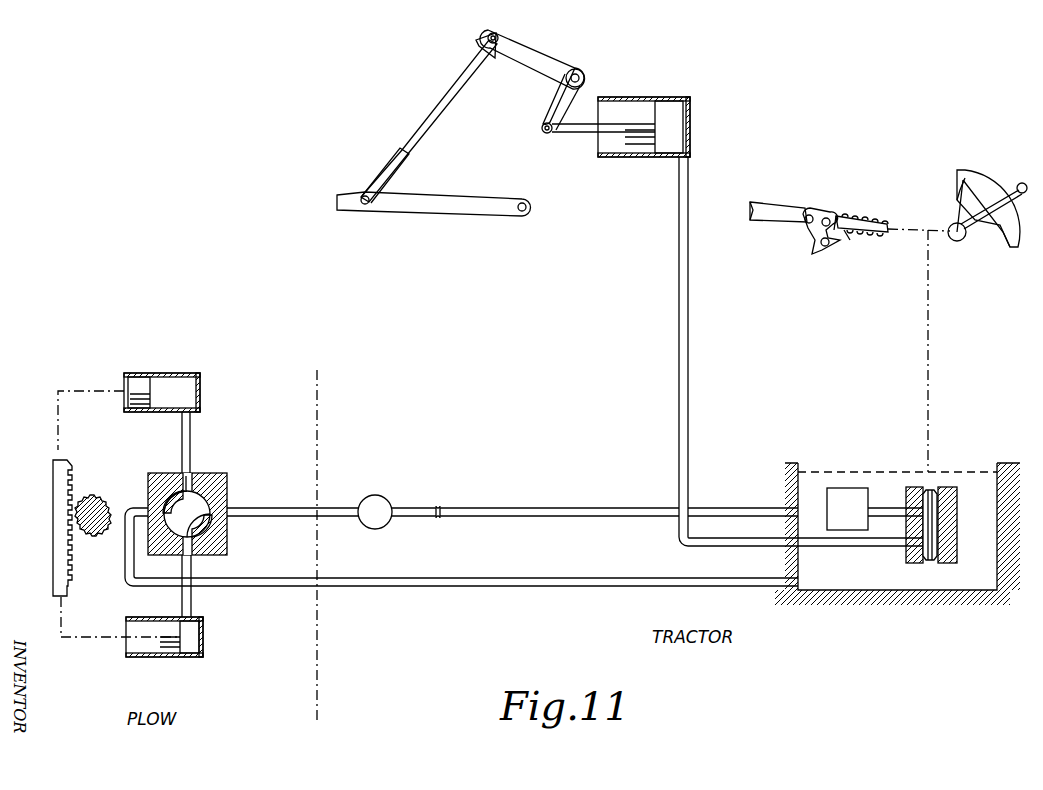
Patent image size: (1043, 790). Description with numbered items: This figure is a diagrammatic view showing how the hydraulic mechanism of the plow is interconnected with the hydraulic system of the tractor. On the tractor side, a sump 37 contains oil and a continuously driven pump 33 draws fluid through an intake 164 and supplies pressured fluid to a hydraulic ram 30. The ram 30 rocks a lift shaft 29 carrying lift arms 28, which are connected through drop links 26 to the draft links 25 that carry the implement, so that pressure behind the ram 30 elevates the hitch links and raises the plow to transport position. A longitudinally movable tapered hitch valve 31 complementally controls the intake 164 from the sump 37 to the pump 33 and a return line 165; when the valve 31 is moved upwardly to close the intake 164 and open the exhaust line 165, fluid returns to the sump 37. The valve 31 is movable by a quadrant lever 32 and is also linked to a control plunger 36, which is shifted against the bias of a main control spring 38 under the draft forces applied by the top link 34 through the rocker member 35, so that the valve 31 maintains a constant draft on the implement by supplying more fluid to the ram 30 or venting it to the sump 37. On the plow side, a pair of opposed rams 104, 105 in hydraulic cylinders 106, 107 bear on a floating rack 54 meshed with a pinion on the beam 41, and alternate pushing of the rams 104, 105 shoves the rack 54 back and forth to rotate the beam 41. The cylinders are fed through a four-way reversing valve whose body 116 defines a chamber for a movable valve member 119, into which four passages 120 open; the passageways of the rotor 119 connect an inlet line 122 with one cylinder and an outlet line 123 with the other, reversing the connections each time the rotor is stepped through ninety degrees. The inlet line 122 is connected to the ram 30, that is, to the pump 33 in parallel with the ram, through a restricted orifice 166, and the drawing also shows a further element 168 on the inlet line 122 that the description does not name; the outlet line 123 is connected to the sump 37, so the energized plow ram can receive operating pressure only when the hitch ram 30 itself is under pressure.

The draft links 25 is at (447, 213).
The drop links 26 is at (436, 114).
The lift arms 28 is at (534, 55).
The lift shaft 29 is at (580, 76).
The hydraulic ram 30 is at (640, 150).
The tapered hitch valve 31 is at (938, 526).
The quadrant lever 32 is at (1012, 178).
The pump 33 is at (845, 490).
The top link 34 is at (773, 205).
The rocker member 35 is at (819, 210).
The control plunger 36 is at (884, 220).
The sump 37 is at (899, 592).
The main control spring 38 is at (862, 244).
The beam 41 is at (94, 497).
The rack 54 is at (58, 492).
The ram 104 is at (139, 384).
The ram 105 is at (175, 657).
The hydraulic cylinder 106 is at (186, 373).
The hydraulic cylinder 107 is at (152, 657).
The valve body 116 is at (204, 499).
The movable valve member 119 is at (218, 473).
The passages 120 is at (170, 480).
The inlet line 122 is at (288, 504).
The outlet line 123 is at (284, 590).
The intake 164 is at (889, 508).
The return line 165 is at (867, 546).
The restricted orifice 166 is at (440, 518).
The accumulator 168 is at (378, 498).